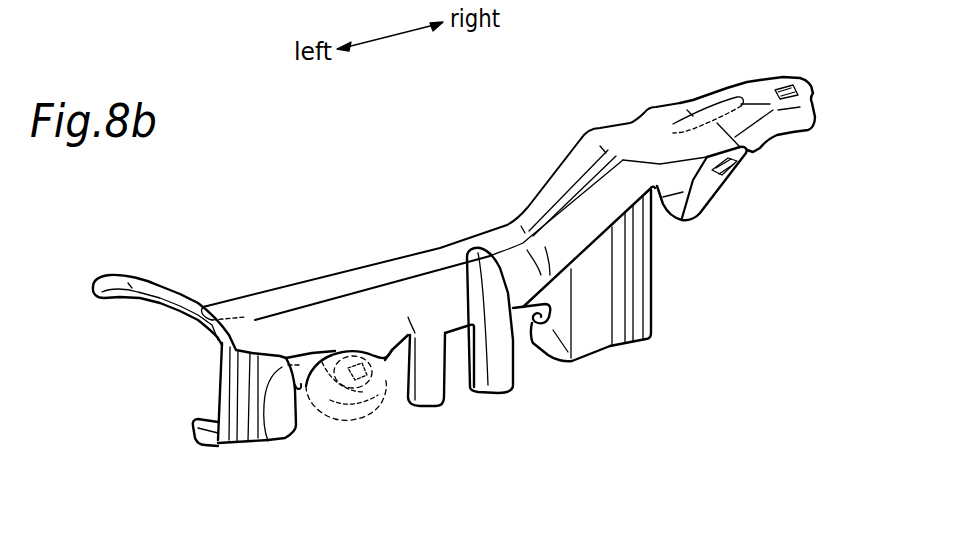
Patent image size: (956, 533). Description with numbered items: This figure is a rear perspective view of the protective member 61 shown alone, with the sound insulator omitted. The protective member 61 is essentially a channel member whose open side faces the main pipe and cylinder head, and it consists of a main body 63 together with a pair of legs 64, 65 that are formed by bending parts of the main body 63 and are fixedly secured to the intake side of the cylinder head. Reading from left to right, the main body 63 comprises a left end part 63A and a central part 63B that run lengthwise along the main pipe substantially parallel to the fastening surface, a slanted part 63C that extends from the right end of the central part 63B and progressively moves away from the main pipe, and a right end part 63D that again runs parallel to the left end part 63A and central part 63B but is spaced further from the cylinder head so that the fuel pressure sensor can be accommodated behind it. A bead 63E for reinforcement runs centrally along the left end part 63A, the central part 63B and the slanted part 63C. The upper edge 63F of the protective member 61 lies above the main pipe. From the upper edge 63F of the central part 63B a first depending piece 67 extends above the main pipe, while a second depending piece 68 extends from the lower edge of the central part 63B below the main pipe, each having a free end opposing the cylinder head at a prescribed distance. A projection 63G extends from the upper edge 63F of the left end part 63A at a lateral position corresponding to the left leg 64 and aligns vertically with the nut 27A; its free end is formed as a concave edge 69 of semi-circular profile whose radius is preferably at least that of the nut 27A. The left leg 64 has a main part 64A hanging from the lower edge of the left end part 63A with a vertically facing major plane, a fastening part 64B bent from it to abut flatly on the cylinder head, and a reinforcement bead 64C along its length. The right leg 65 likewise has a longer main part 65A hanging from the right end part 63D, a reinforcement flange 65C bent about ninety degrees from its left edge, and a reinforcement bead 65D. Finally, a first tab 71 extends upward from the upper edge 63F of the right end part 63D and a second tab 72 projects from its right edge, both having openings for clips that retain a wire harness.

The nut 27A is at (359, 426).
The protective member 61 is at (142, 280).
The main body 63 is at (418, 245).
The left end part 63A is at (268, 318).
The central part 63B is at (447, 281).
The slanted part 63C is at (563, 178).
The right end part 63D is at (663, 118).
The bead 63E is at (353, 277).
The upper edge 63F is at (453, 323).
The projection 63G is at (268, 423).
The left leg 64 is at (205, 447).
The main part 64A is at (228, 375).
The fastening part 64B is at (198, 420).
The reinforcement bead 64C is at (292, 430).
The right leg 65 is at (654, 322).
The main part 65A is at (651, 284).
The reinforcement flange 65C is at (558, 332).
The reinforcement bead 65D is at (622, 340).
The first depending piece 67 is at (497, 388).
The second depending piece 68 is at (432, 407).
The concave edge 69 is at (352, 420).
The first tab 71 is at (723, 192).
The second tab 72 is at (788, 75).